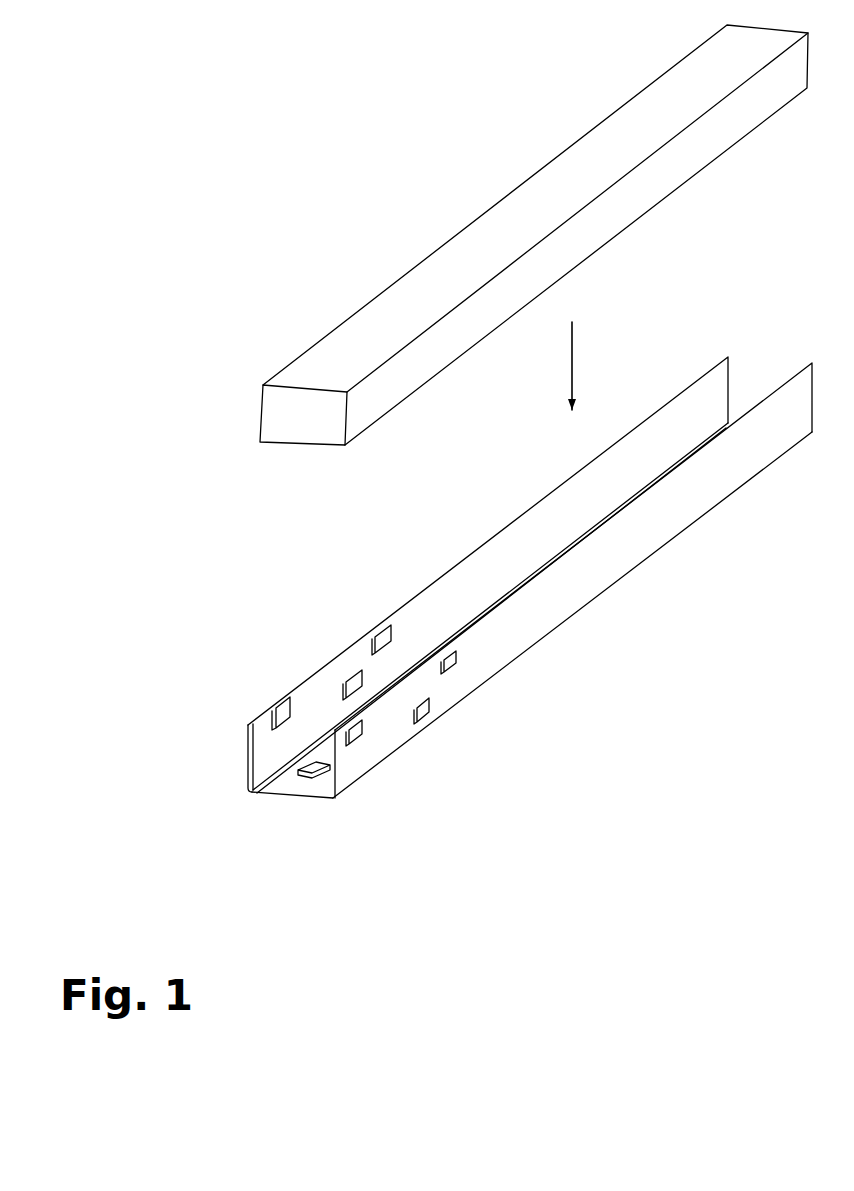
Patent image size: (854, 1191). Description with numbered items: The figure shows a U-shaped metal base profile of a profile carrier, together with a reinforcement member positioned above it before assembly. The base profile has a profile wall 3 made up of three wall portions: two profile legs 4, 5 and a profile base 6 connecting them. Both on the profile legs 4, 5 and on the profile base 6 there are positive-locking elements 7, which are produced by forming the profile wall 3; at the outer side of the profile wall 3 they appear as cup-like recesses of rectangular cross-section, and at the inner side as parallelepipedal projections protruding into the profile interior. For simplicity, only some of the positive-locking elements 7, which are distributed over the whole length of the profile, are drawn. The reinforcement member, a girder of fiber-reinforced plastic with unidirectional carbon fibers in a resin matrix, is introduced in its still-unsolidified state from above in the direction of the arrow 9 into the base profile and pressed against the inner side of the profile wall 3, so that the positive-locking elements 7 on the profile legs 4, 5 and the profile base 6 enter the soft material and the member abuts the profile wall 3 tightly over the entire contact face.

The arrow 9 is at (572, 355).
The profile wall 3 is at (485, 625).
The positive-locking elements 7 is at (425, 710).
The profile leg 5 is at (245, 757).
The profile base 6 is at (293, 800).
The profile leg 4 is at (347, 760).